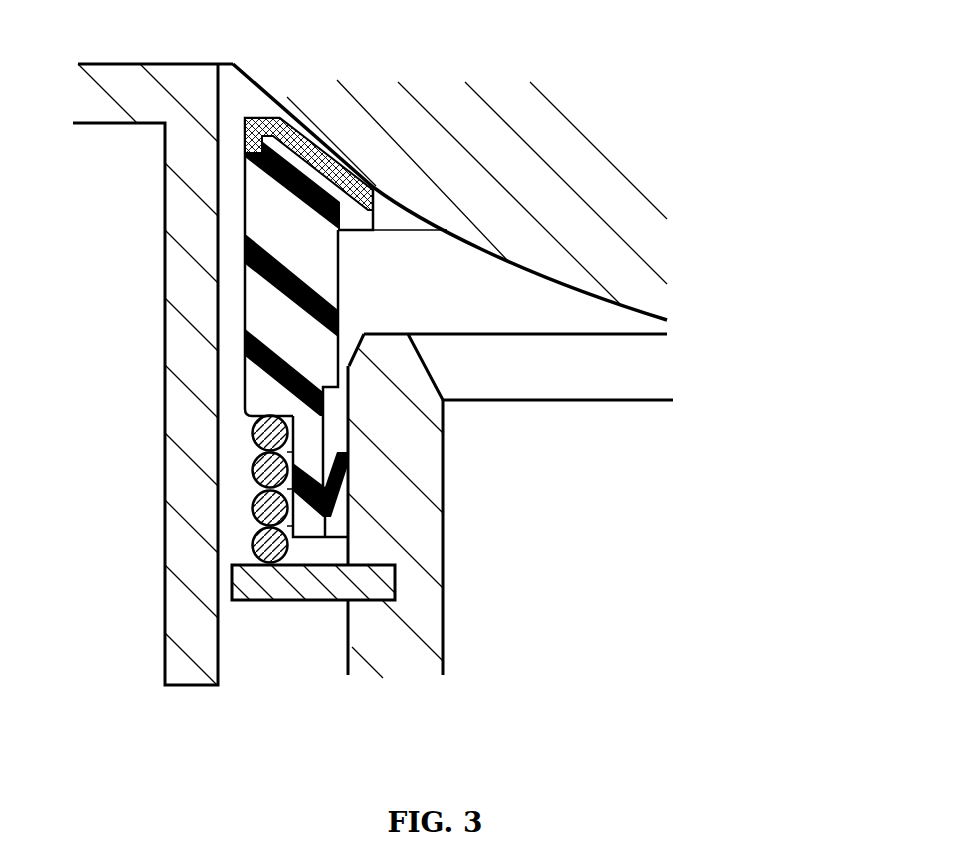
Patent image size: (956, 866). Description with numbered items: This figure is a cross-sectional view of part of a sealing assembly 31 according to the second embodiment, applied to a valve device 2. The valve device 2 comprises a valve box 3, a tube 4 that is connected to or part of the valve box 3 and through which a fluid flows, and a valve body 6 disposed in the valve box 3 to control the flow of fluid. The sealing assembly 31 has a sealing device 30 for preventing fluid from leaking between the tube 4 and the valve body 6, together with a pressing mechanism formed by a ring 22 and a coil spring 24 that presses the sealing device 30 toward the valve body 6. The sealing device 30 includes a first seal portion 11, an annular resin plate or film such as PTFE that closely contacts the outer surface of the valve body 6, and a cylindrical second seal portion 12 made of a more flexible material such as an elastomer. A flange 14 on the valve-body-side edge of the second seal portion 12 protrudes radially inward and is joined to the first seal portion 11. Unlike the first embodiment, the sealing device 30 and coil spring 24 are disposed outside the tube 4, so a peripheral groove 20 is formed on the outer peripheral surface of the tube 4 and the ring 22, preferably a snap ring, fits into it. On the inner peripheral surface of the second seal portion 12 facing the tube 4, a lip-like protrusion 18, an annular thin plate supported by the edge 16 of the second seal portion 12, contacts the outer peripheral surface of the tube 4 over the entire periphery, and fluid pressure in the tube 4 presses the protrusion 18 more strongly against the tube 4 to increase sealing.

The valve device 2 is at (102, 125).
The valve box 3 is at (142, 284).
The tube 4 is at (348, 665).
The valve body 6 is at (507, 261).
The first seal portion 11 is at (255, 118).
The second seal portion 12 is at (257, 313).
The flange 14 is at (347, 226).
The edge 16 is at (331, 524).
The protrusion 18 is at (345, 468).
The peripheral groove 20 is at (337, 590).
The ring 22 is at (243, 590).
The coil spring 24 is at (257, 555).
The sealing device 30 is at (240, 233).
The sealing assembly 31 is at (207, 652).